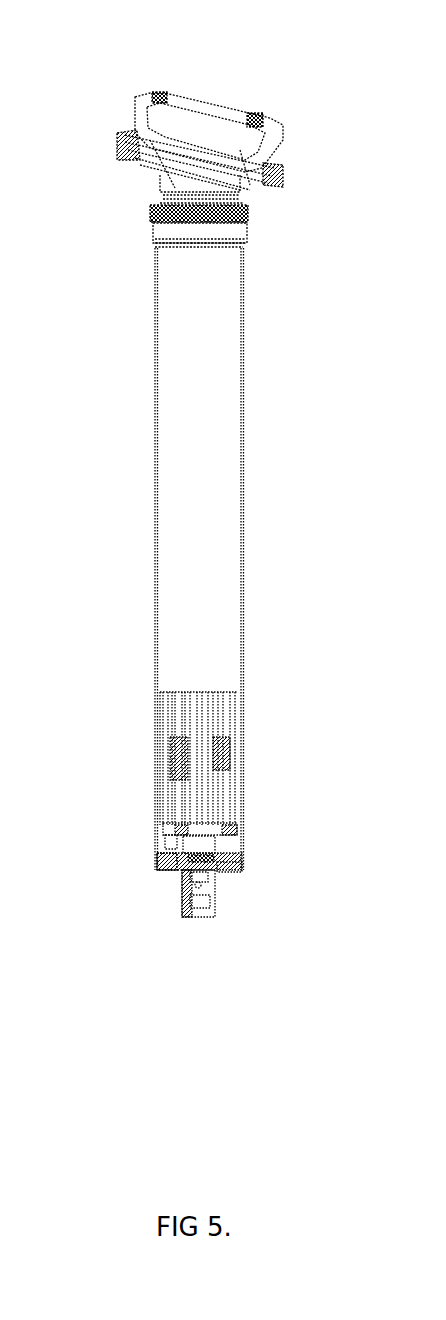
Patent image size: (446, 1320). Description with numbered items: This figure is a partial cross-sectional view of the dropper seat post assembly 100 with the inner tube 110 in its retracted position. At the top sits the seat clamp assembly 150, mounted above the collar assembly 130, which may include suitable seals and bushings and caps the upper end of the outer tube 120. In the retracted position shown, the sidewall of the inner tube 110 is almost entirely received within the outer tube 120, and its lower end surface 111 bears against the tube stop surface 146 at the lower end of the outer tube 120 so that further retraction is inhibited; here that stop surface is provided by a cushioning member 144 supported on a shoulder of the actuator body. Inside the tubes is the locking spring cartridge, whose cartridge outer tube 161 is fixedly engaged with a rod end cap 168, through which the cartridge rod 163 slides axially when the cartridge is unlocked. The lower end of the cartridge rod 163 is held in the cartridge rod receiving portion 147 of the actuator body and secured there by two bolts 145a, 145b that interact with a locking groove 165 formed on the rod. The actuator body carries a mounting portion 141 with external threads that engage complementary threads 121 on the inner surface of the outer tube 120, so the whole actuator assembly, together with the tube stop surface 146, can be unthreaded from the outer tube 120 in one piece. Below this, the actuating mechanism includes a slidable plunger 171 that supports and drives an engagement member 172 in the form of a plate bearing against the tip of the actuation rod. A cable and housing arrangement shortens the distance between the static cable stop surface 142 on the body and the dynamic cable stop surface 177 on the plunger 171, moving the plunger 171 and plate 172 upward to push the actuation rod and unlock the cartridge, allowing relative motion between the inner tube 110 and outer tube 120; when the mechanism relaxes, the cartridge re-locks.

The seat post assembly 100 is at (318, 63).
The seat clamp assembly 150 is at (133, 100).
The collar assembly 130 is at (248, 213).
The outer tube 120 is at (243, 365).
The inner tube 110 is at (165, 722).
The cartridge outer tube 161 is at (226, 703).
The rod end cap 168 is at (211, 796).
The cartridge rod 163 is at (213, 830).
The bolt 145a is at (240, 838).
The bolt 145b is at (188, 832).
The locking groove 165 is at (205, 828).
The cartridge rod receiving portion 147 is at (182, 838).
The cushioning member 144 is at (232, 853).
The mounting portion 141 is at (240, 862).
The complementary threads 121 is at (229, 867).
The lower end surface 111 is at (167, 855).
The tube stop surface 146 is at (167, 861).
The slidable plunger 171 is at (215, 912).
The engagement member 172 is at (192, 862).
The static cable stop surface 142 is at (202, 887).
The dynamic cable stop surface 177 is at (196, 908).